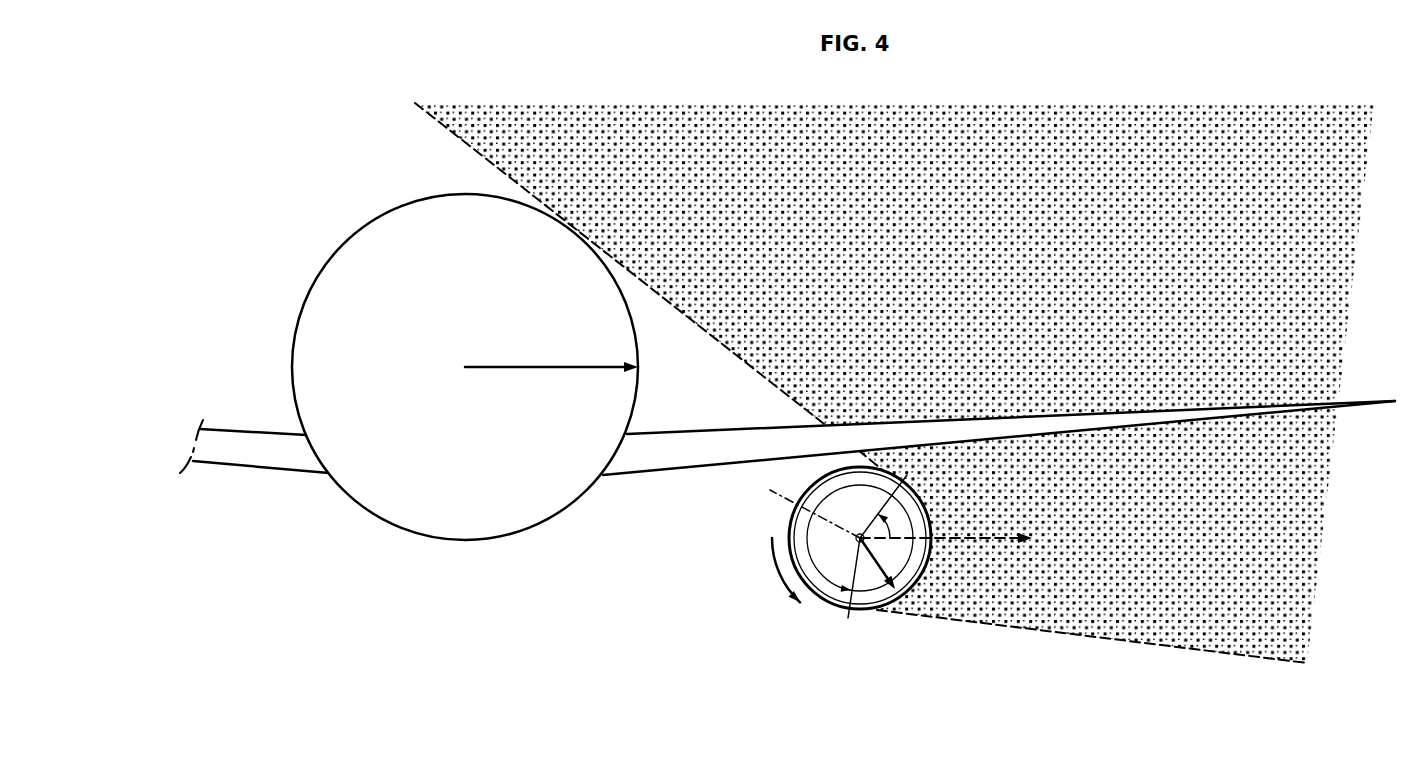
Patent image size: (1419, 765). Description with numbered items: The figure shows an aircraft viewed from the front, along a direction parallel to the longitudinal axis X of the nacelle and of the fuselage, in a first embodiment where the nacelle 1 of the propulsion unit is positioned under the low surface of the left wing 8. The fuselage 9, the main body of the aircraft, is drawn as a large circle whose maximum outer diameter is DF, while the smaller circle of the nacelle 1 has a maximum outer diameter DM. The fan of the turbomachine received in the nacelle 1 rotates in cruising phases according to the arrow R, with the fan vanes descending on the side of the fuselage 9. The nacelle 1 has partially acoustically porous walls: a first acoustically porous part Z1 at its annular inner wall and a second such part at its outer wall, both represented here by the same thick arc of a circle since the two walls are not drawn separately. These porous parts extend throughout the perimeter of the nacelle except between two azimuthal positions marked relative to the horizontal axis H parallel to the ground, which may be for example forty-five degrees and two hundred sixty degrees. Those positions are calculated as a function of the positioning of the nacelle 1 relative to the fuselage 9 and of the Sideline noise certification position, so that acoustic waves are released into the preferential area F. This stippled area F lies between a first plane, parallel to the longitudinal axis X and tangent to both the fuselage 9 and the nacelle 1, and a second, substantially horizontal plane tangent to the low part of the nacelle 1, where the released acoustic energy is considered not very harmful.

The nacelle 1 is at (888, 562).
The left wing 8 is at (766, 418).
The fuselage 9 is at (465, 390).
The preferential area F is at (1031, 336).
The maximum diameter of the fuselage outer surface DF is at (551, 358).
The maximum diameter of the nacelle outer surface DM is at (886, 563).
The horizontal axis H is at (946, 529).
The longitudinal axis X is at (807, 507).
The direction of rotation R is at (778, 570).
The first acoustically porous part Z1 is at (939, 570).